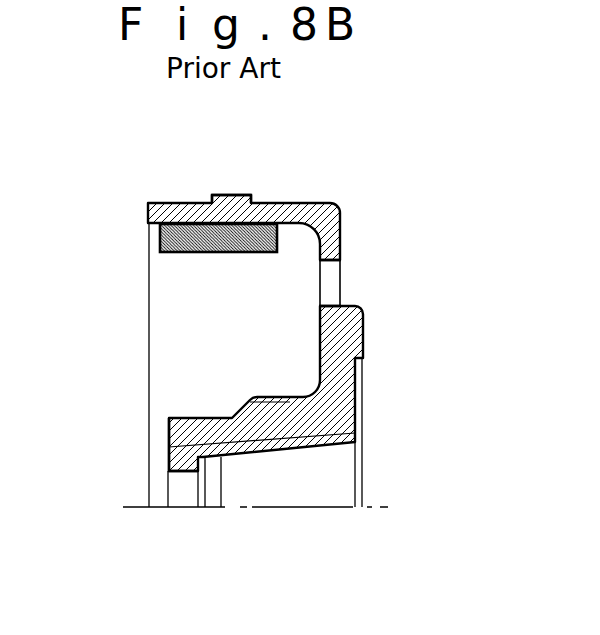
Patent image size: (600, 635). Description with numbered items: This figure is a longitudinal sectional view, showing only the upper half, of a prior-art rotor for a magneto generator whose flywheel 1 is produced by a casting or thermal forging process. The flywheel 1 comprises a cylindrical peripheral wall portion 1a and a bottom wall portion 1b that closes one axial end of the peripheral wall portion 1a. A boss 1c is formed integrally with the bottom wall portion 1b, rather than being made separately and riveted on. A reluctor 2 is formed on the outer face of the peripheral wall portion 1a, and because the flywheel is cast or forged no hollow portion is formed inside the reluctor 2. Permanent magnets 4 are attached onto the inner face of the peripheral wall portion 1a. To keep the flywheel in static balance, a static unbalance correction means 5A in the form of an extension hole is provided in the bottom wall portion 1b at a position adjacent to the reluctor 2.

The flywheel 1 is at (255, 312).
The cylindrical peripheral wall portion 1a is at (181, 207).
The bottom wall portion 1b is at (337, 307).
The boss 1c is at (203, 429).
The reluctor 2 is at (228, 196).
The permanent magnets 4 is at (247, 253).
The static unbalance correction means 5A is at (327, 283).